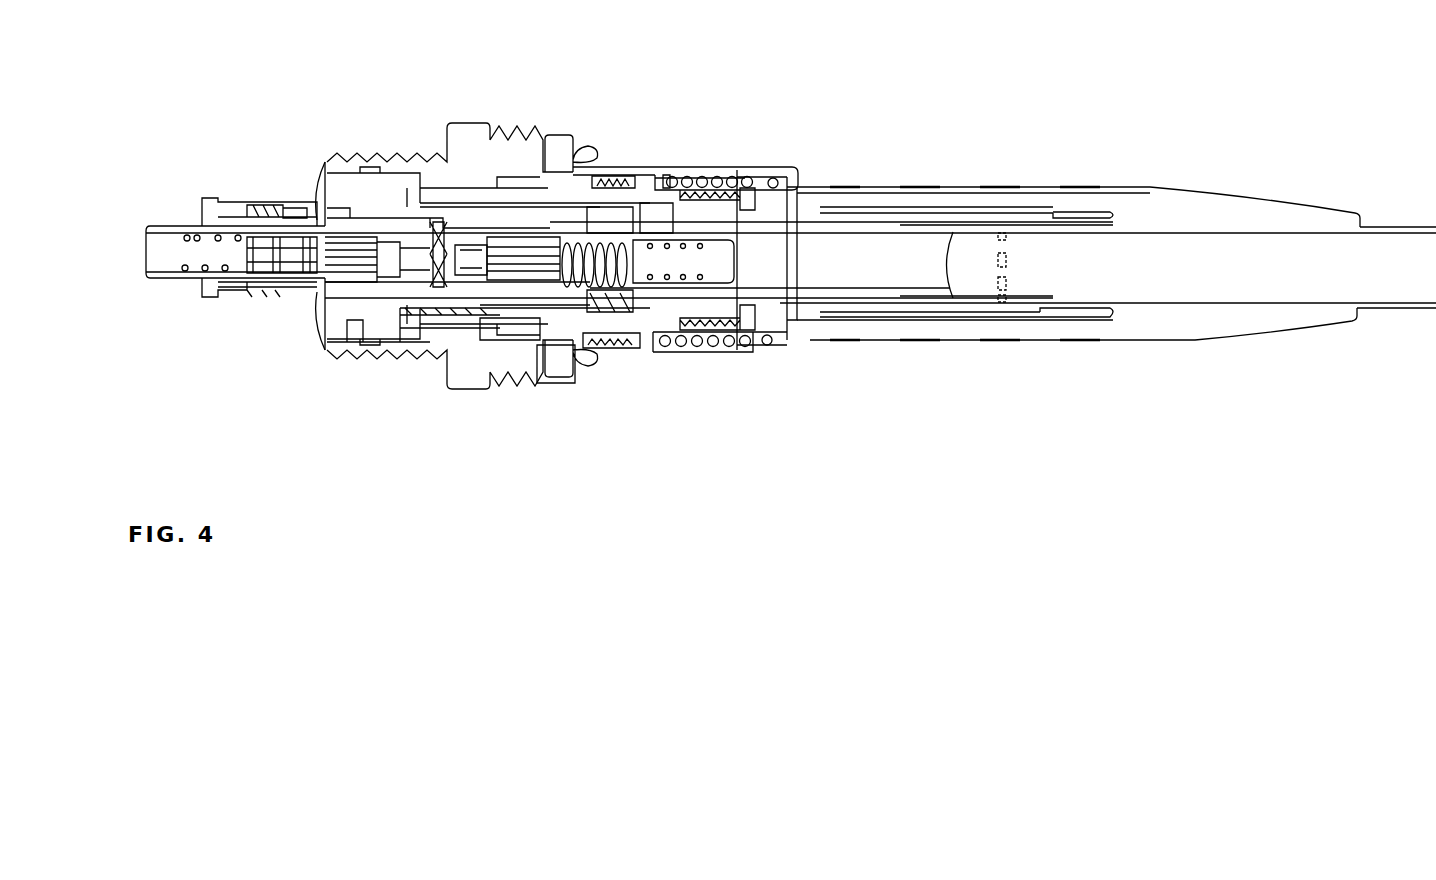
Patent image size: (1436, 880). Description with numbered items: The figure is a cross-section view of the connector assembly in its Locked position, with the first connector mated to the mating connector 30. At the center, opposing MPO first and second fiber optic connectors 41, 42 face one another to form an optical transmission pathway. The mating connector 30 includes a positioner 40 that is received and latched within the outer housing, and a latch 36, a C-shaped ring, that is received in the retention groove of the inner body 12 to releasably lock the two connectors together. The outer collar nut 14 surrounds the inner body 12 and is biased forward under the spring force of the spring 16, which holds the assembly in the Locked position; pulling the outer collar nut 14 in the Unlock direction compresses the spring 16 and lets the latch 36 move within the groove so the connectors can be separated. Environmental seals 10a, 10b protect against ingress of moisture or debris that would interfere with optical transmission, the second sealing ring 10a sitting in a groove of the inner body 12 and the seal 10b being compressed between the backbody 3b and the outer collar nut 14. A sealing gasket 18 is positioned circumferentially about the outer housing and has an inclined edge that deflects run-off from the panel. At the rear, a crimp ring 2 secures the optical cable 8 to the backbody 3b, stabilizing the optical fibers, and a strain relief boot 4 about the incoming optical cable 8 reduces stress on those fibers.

The crimp ring 2 is at (982, 284).
The backbody 3b is at (203, 302).
The strain relief boot 4 is at (1194, 194).
The optical cable 8 is at (1134, 275).
The second sealing ring 10a is at (533, 334).
The seal 10b is at (782, 355).
The inner body 12 is at (469, 332).
The outer collar nut 14 is at (758, 159).
The spring 16 is at (716, 360).
The sealing gasket 18 is at (567, 149).
The mating connector 30 is at (333, 117).
The latch 36 is at (596, 166).
The positioner 40 is at (382, 328).
The first fiber optic connector 41 is at (553, 300).
The second fiber optic connector 42 is at (382, 284).